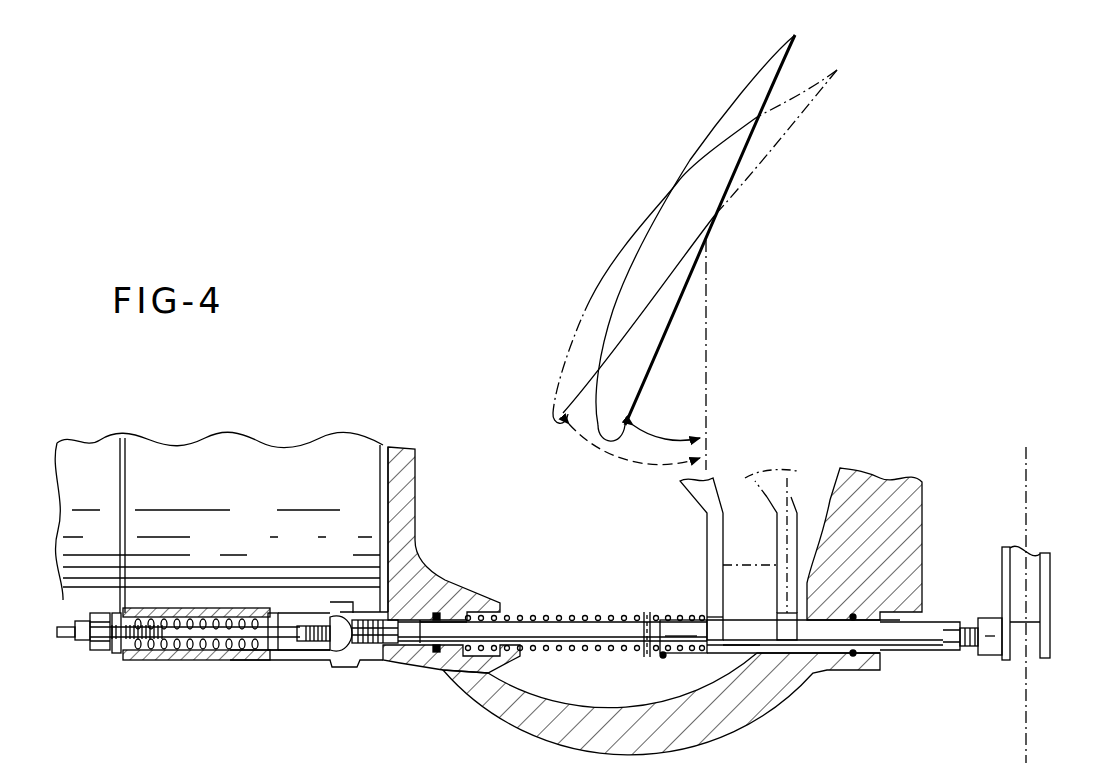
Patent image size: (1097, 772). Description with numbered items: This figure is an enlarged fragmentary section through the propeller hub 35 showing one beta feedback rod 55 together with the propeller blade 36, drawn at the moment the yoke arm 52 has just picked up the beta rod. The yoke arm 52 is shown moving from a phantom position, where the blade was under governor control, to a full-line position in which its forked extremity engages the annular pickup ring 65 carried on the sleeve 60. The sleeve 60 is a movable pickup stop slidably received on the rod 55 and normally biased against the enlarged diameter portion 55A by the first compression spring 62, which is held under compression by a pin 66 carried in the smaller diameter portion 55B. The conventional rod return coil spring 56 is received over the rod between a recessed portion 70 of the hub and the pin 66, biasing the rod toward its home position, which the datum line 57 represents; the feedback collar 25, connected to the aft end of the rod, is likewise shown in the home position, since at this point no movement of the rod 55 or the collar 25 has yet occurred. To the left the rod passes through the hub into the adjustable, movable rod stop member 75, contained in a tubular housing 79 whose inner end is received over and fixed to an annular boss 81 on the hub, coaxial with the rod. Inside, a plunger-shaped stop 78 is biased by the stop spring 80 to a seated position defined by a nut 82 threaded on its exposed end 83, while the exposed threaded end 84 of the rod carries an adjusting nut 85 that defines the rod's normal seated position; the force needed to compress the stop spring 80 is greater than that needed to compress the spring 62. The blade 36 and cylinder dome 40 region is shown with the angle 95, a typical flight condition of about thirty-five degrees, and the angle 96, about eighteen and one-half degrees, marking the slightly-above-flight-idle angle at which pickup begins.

The feedback collar 25 is at (1002, 560).
The propeller hub 35 is at (533, 712).
The propeller blade 36 is at (643, 377).
The cylinder dome 40 is at (267, 533).
The yoke arm 52 is at (790, 474).
The beta feedback rod 55 is at (932, 618).
The enlarged diameter portion 55A is at (807, 637).
The smaller diameter portion 55B is at (587, 627).
The return spring 56 is at (550, 615).
The home position 57 is at (1024, 687).
The sleeve 60 is at (683, 627).
The first compression spring 62 is at (665, 657).
The pickup ring 65 is at (700, 653).
The pin 66 is at (647, 615).
The recessed portion 70 is at (480, 652).
The rod stop member 75 is at (322, 666).
The plunger-shaped stop 78 is at (273, 650).
The tubular housing 79 is at (336, 603).
The stop spring 80 is at (200, 608).
The annular boss 81 is at (380, 650).
The nut 82 is at (97, 650).
The exposed end 83 is at (83, 648).
The exposed threaded end 84 is at (312, 627).
The adjusting nut 85 is at (345, 620).
The angle 95 is at (620, 457).
The angle 96 is at (667, 433).